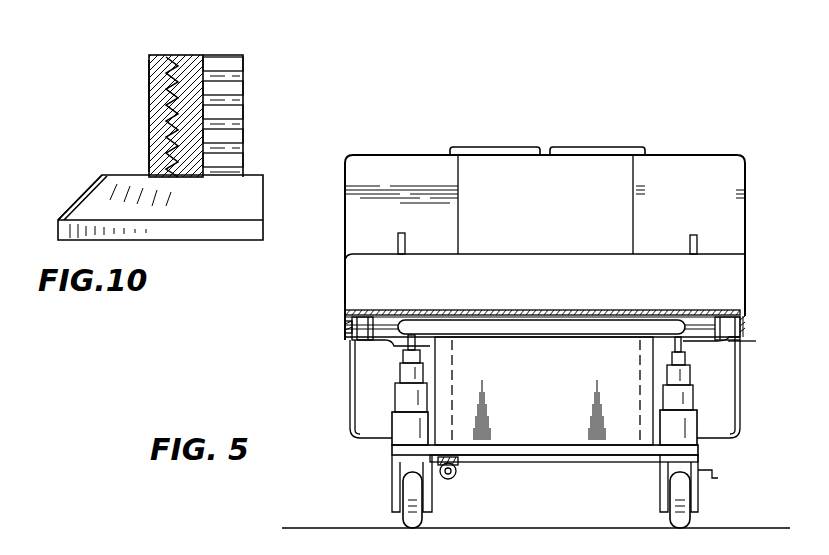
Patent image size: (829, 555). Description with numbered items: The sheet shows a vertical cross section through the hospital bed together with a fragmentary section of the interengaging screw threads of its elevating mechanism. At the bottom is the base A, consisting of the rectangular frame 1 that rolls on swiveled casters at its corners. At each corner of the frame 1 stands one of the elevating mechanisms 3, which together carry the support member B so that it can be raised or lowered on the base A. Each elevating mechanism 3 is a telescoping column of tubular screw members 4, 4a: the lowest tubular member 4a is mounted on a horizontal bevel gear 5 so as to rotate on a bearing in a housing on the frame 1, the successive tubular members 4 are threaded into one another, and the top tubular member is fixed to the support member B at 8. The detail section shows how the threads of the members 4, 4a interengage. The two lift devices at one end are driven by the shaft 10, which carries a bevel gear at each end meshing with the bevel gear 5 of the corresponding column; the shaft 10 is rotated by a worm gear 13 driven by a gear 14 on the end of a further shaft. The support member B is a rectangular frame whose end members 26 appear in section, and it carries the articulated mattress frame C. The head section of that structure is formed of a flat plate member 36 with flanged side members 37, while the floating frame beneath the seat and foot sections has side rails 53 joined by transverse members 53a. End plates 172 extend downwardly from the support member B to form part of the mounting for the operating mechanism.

In FIG. 5, the rectangular frame 1 is at (703, 452).
In FIG. 5, the elevating mechanism 3 is at (384, 417).
In FIG. 10, the tubular screw member 4 is at (190, 55).
In FIG. 5, the tubular screw member 4 is at (424, 376).
In FIG. 10, the lowest tubular member 4a is at (149, 122).
In FIG. 5, the lowest tubular member 4a is at (397, 401).
In FIG. 10, the horizontal bevel gear 5 is at (240, 244).
In FIG. 5, the fixing point of top tubular member 8 is at (405, 349).
In FIG. 5, the shaft 10 is at (595, 463).
In FIG. 5, the worm gear 13 is at (449, 483).
In FIG. 5, the gear 14 is at (457, 474).
In FIG. 5, the end member 26 is at (585, 338).
In FIG. 5, the flat plate member 36 is at (460, 309).
In FIG. 5, the side member 37 is at (746, 314).
In FIG. 5, the side rail 53 is at (346, 334).
In FIG. 5, the transverse member 53a is at (385, 309).
In FIG. 5, the end plate 172 is at (558, 430).
In FIG. 5, the base A is at (386, 453).
In FIG. 5, the support member B is at (540, 338).
In FIG. 5, the articulated mattress frame C is at (336, 318).